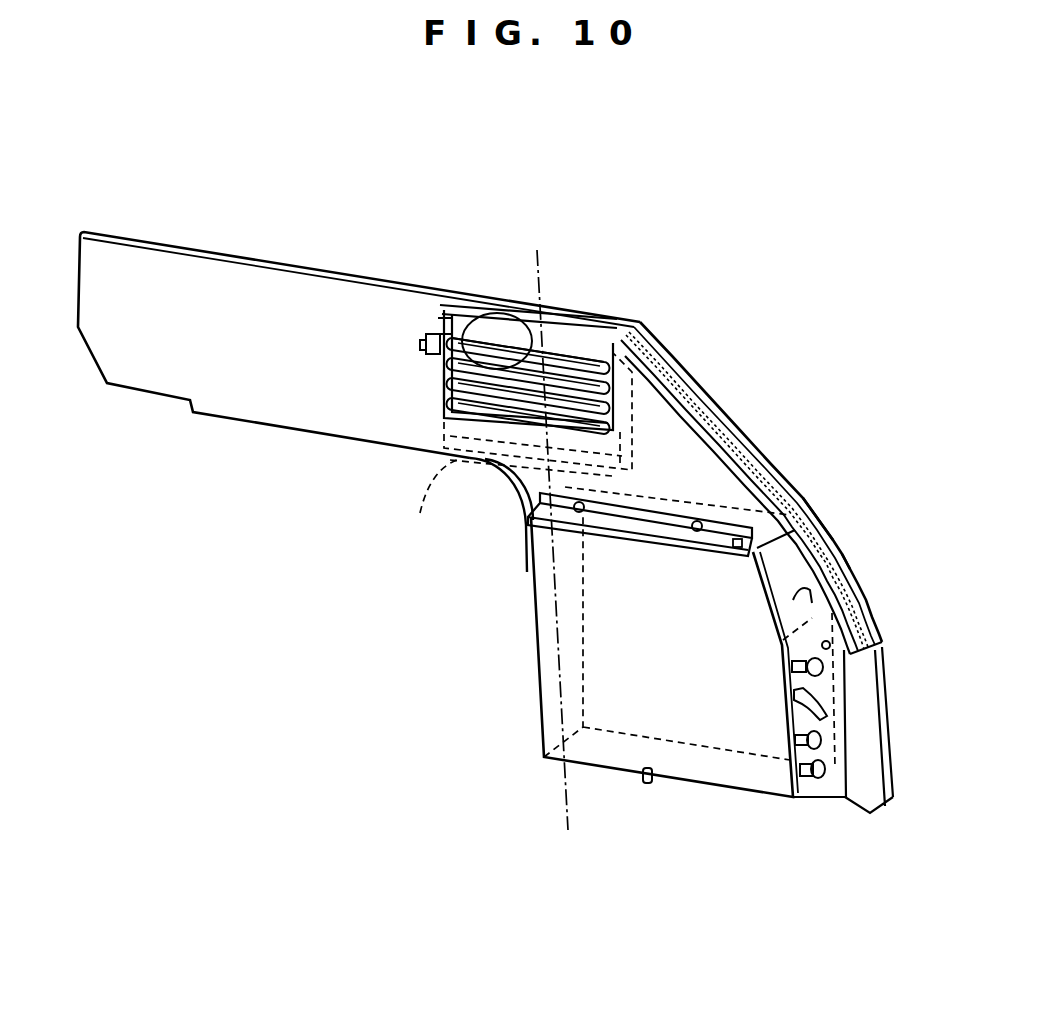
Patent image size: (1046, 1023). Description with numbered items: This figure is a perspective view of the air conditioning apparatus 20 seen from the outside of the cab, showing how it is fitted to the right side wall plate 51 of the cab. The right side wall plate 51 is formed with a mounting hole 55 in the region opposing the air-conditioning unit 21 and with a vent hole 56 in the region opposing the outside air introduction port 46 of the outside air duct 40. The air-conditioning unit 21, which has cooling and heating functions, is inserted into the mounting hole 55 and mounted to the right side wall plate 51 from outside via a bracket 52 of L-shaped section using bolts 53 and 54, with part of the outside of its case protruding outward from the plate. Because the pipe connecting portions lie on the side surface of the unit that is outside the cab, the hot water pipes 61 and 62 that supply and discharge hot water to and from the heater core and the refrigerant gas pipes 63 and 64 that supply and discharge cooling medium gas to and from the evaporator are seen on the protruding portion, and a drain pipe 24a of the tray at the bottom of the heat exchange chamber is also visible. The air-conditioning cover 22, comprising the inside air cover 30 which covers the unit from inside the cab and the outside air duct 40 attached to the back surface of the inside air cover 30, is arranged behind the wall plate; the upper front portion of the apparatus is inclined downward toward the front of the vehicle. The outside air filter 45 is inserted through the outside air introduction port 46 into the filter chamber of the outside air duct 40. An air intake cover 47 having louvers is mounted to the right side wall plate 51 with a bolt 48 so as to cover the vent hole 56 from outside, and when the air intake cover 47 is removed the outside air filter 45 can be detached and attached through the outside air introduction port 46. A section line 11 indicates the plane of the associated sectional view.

The section line 11 is at (571, 827).
The air conditioning apparatus 20 is at (832, 517).
The air-conditioning unit 21 is at (548, 698).
The air-conditioning cover 22 is at (782, 487).
The drain pipe 24a is at (650, 782).
The inside air cover 30 is at (715, 412).
The outside air duct 40 is at (488, 341).
The outside air filter 45 is at (490, 345).
The outside air introduction port 46 is at (470, 334).
The air intake cover 47 is at (440, 377).
The bolt 48 is at (437, 324).
The right side wall plate 51 is at (256, 385).
The bracket 52 is at (625, 508).
The bolt 53 is at (698, 528).
The bolt 54 is at (520, 545).
The mounting hole 55 is at (800, 593).
The vent hole 56 is at (460, 470).
The hot water pipe 61 is at (824, 669).
The hot water pipe 62 is at (829, 705).
The refrigerant gas pipe 63 is at (823, 740).
The refrigerant gas pipe 64 is at (812, 778).